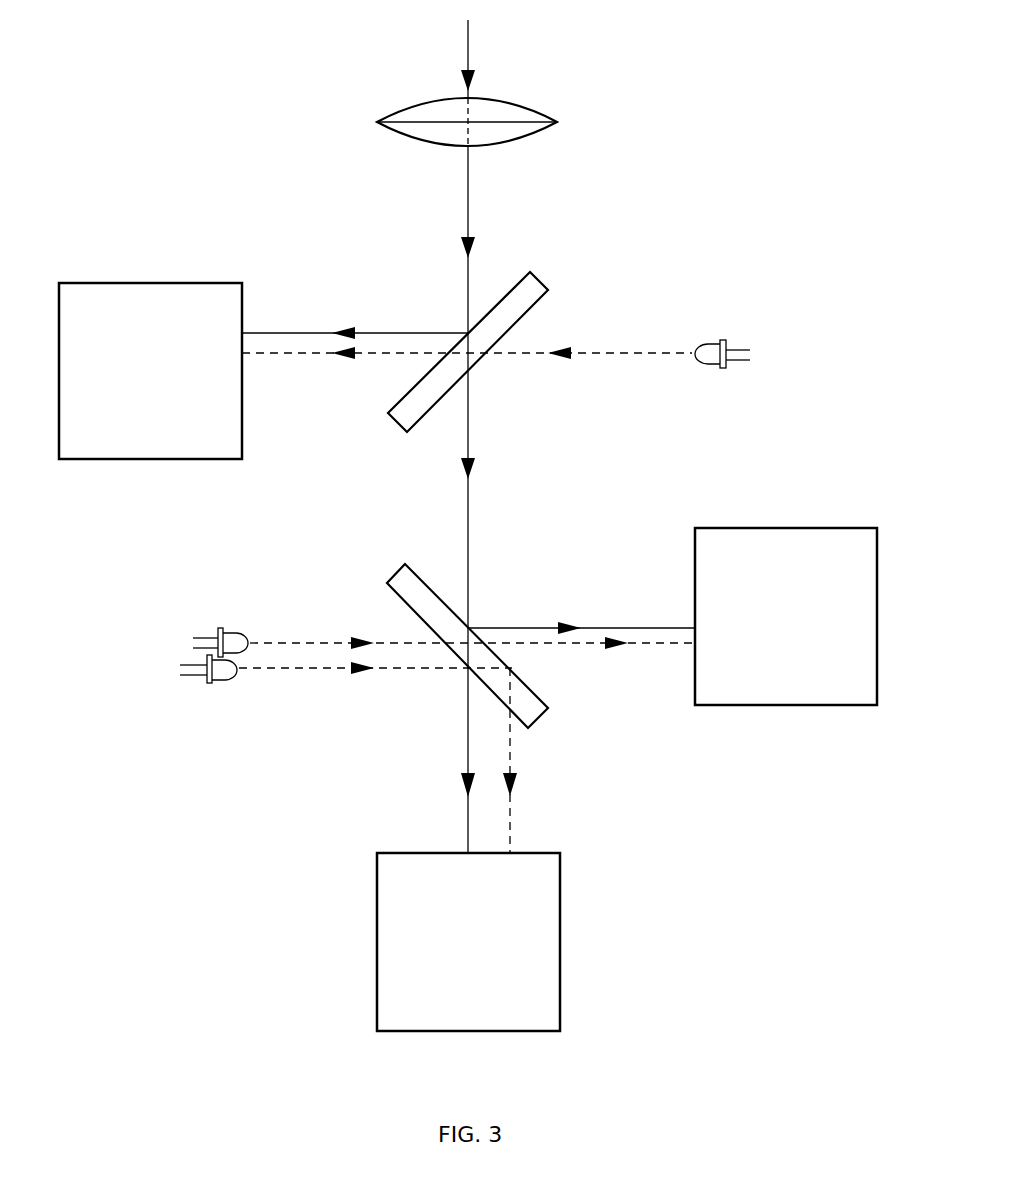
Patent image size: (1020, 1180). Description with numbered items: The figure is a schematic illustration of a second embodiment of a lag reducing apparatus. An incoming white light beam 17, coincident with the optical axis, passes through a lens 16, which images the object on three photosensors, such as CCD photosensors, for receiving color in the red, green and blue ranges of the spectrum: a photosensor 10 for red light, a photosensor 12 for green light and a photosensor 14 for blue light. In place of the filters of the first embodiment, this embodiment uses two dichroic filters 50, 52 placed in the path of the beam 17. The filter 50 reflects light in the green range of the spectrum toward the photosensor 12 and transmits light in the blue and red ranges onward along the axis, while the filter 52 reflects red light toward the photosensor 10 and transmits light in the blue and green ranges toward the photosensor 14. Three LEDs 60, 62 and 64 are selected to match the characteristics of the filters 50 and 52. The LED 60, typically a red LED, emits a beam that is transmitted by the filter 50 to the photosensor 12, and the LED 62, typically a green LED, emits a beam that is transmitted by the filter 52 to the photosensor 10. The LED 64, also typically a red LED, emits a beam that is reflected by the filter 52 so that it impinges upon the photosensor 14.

The photosensor 10 is at (878, 625).
The photosensor 12 is at (130, 281).
The photosensor 14 is at (562, 962).
The lens 16 is at (535, 108).
The white light beam 17 is at (470, 203).
The dichroic filter 50 is at (548, 290).
The dichroic filter 52 is at (397, 572).
The LED 60 is at (705, 345).
The LED 62 is at (230, 633).
The LED 64 is at (225, 678).